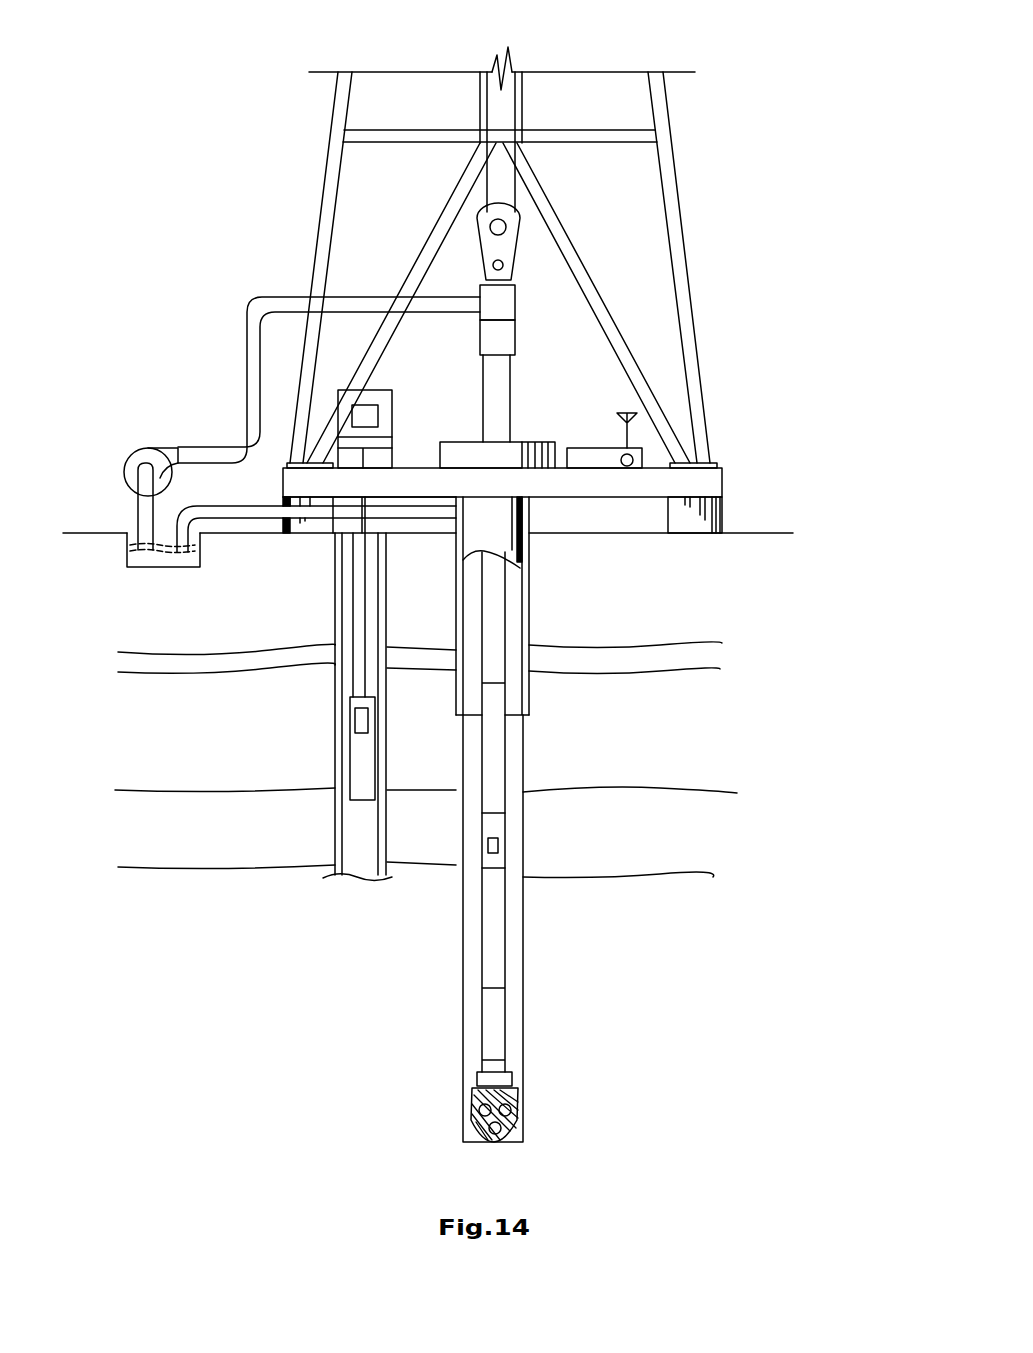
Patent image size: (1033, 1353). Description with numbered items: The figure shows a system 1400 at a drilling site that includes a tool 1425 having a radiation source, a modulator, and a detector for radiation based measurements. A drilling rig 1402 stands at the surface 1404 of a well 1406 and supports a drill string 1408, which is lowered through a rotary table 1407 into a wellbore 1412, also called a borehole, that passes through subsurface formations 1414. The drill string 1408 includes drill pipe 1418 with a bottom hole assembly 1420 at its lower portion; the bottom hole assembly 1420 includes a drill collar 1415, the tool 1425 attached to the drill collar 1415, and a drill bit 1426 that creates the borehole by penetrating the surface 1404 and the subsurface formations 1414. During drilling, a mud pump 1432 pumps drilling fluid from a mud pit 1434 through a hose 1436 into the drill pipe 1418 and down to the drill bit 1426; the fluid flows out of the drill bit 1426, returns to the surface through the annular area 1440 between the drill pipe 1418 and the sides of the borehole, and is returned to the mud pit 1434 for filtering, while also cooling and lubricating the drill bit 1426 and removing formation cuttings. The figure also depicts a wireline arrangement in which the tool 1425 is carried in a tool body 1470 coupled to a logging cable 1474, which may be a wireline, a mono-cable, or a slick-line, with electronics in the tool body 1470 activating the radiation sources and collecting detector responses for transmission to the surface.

The system 1400 is at (222, 92).
The drilling rig 1402 is at (695, 228).
The surface 1404 is at (740, 532).
The well 1406 is at (552, 524).
The rotary table 1407 is at (462, 443).
The drill string 1408 is at (520, 585).
The wellbore 1412 is at (517, 656).
The subsurface formations 1414 is at (122, 880).
The drill collar 1415 is at (497, 823).
The drill pipe 1418 is at (507, 730).
The bottom hole assembly 1420 is at (437, 708).
The tool 1425 is at (498, 846).
The drill bit 1426 is at (514, 1100).
The mud pump 1432 is at (155, 443).
The mud pit 1434 is at (133, 538).
The hose 1436 is at (247, 388).
The annular area 1440 is at (515, 768).
The tool body 1470 is at (350, 757).
The logging cable 1474 is at (363, 593).